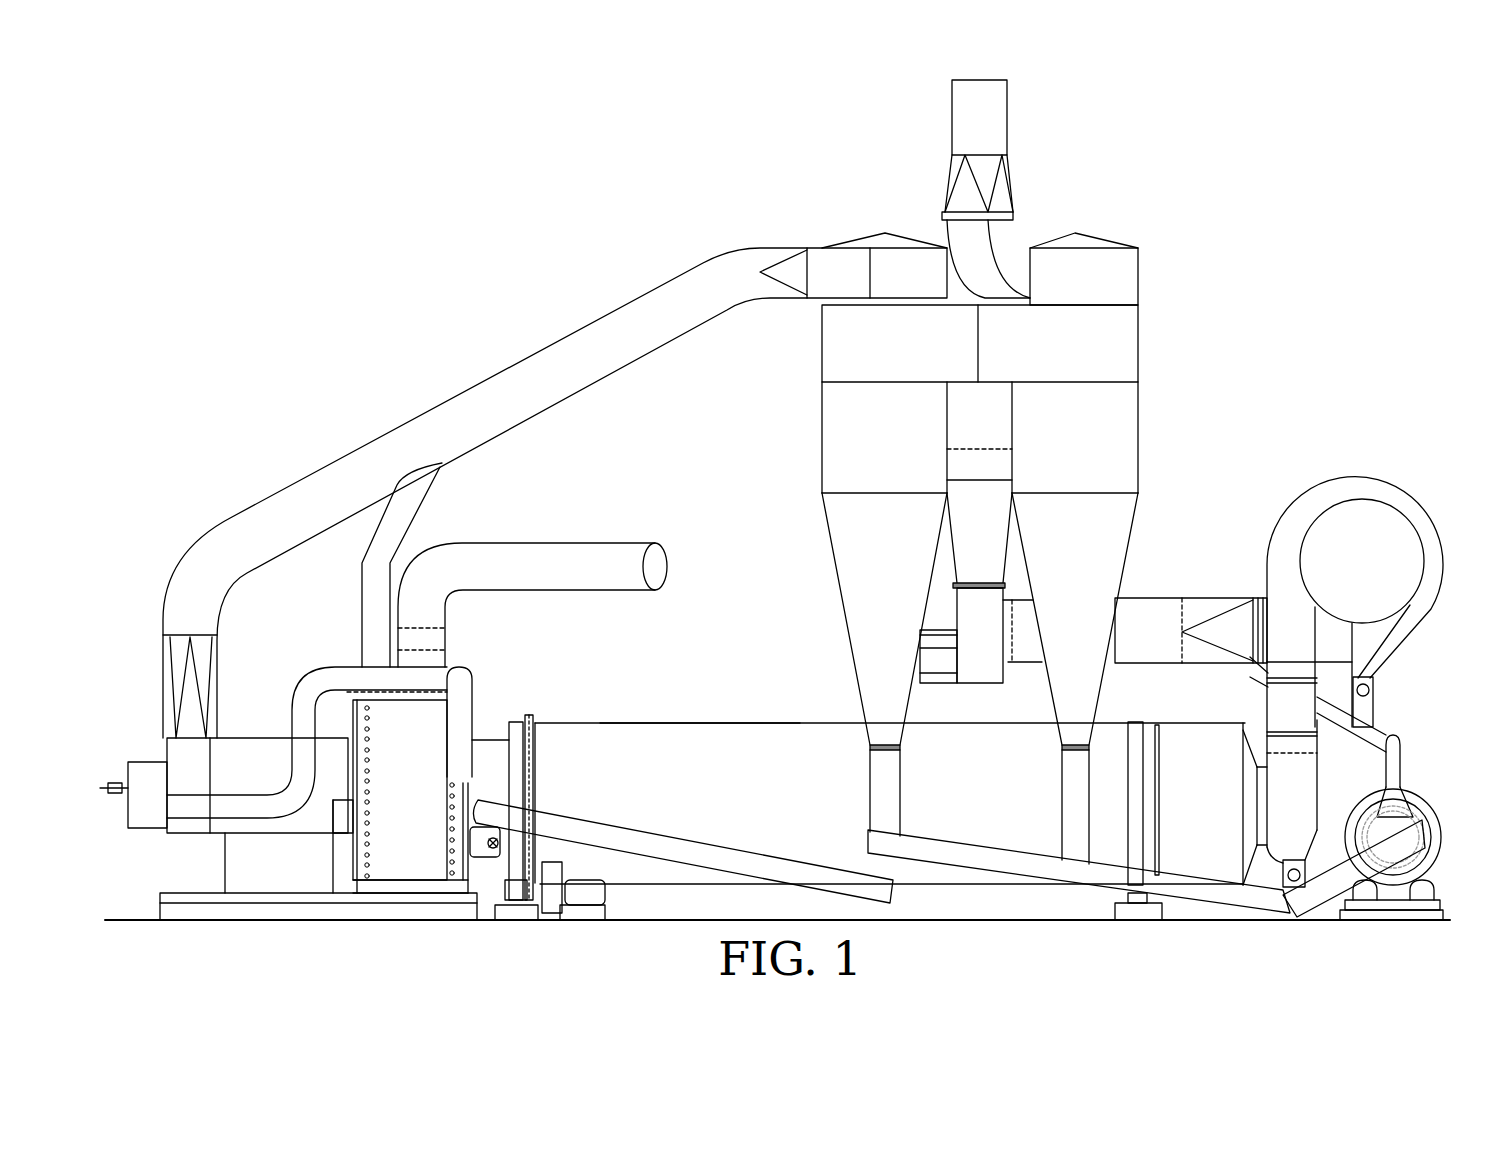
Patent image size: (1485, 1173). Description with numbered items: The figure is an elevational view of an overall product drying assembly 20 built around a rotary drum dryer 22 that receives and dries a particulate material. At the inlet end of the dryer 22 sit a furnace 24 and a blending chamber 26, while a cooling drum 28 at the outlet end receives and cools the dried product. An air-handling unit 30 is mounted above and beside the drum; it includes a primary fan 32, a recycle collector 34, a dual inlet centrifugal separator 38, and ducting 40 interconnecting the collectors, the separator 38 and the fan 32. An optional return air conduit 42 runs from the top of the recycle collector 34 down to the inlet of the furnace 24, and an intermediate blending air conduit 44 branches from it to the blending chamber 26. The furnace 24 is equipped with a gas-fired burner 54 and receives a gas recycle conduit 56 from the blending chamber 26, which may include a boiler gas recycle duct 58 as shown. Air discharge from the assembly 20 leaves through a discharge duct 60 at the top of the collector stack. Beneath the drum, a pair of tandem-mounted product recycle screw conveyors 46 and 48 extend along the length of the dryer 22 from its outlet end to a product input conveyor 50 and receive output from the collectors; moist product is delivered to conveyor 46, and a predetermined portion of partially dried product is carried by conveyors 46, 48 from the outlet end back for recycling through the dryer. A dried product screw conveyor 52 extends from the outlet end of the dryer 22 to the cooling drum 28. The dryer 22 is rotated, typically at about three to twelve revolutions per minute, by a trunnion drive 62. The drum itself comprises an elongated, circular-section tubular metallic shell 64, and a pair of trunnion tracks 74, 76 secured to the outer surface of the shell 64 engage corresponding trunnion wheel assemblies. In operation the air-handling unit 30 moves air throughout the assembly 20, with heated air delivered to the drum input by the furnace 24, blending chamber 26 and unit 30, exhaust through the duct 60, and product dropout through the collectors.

The product drying assembly 20 is at (1222, 158).
The rotary drum dryer 22 is at (901, 753).
The furnace 24 is at (248, 725).
The blending chamber 26 is at (492, 660).
The cooling drum 28 is at (1415, 780).
The air-handling unit 30 is at (979, 542).
The primary fan 32 is at (970, 693).
The recycle collector 34 is at (800, 422).
The dual inlet centrifugal separator 38 is at (1377, 453).
The ducting 40 is at (1187, 578).
The return air conduit 42 is at (612, 322).
The blending air conduit 44 is at (410, 508).
The product recycle screw conveyor 46 is at (990, 858).
The product recycle screw conveyor 48 is at (753, 858).
The product input conveyor 50 is at (465, 835).
The dried product screw conveyor 52 is at (1325, 875).
The gas-fired burner 54 is at (135, 750).
The gas recycle conduit 56 is at (332, 676).
The boiler gas recycle duct 58 is at (572, 547).
The discharge duct 60 is at (990, 120).
The trunnion drive 62 is at (623, 897).
The tubular metallic shell 64 is at (690, 735).
The trunnion track 74 is at (518, 712).
The trunnion track 76 is at (1140, 722).